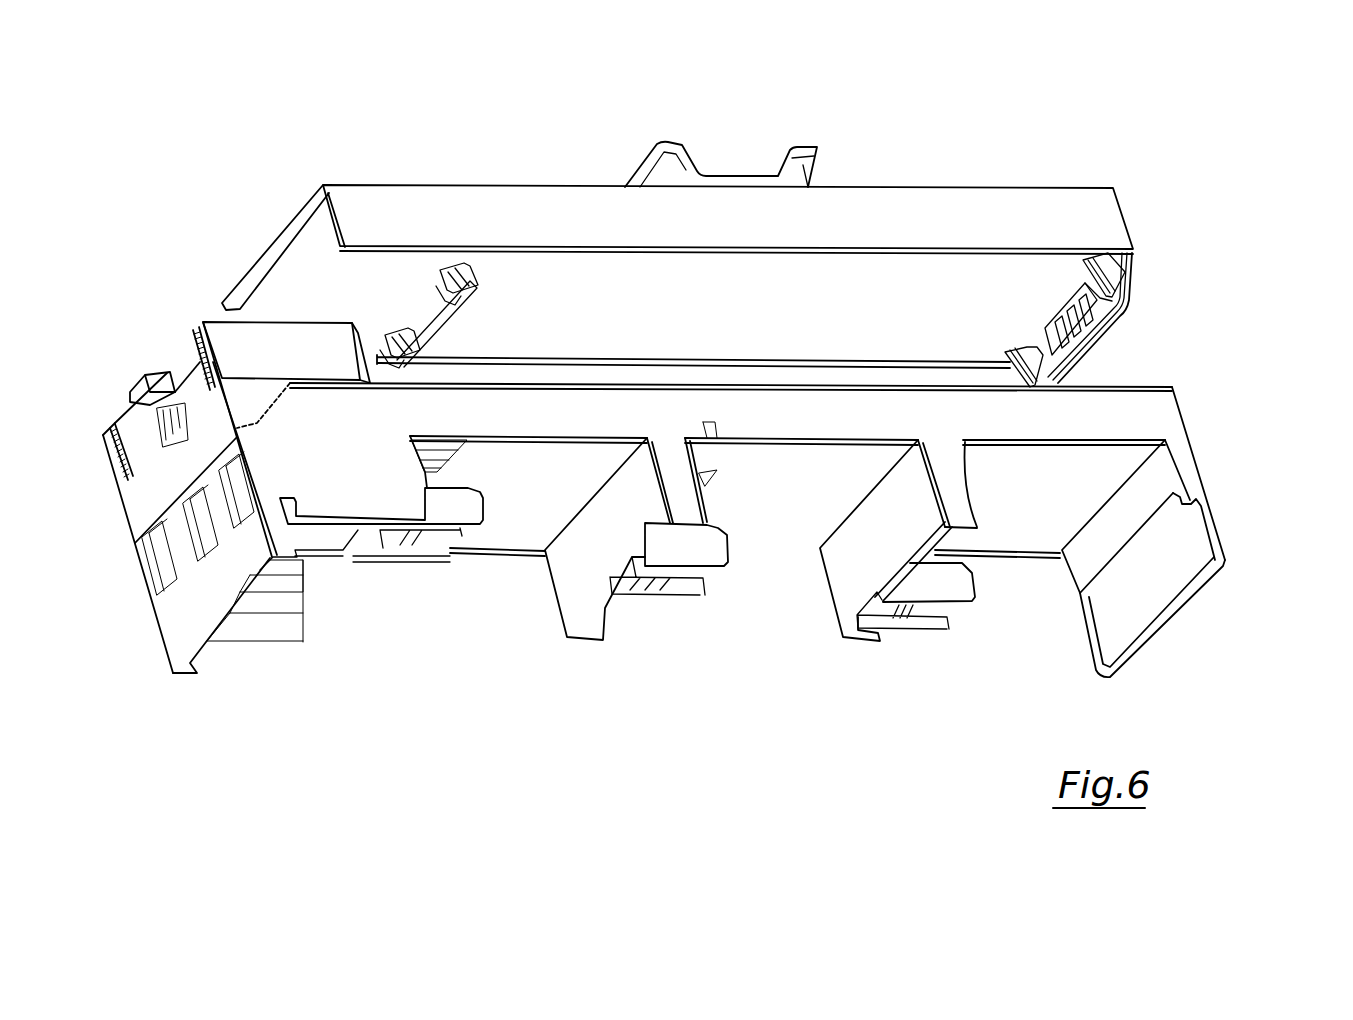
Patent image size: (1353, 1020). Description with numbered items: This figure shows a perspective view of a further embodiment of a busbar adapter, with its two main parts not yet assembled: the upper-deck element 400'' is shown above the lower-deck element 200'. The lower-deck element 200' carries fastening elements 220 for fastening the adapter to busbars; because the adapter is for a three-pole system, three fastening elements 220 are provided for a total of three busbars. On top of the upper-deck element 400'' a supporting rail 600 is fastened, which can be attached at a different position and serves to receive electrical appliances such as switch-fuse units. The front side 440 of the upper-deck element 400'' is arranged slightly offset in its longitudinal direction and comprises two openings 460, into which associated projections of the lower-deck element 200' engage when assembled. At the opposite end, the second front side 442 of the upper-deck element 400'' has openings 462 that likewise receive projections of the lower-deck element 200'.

The upper-deck element 400'' is at (778, 247).
The lower-deck element 200' is at (725, 499).
The supporting rail 600 is at (815, 147).
The front side 440 is at (443, 317).
The openings 460 is at (447, 290).
The openings 462 is at (1100, 293).
The second front side 442 is at (1090, 323).
The fastening elements 220 is at (453, 507).